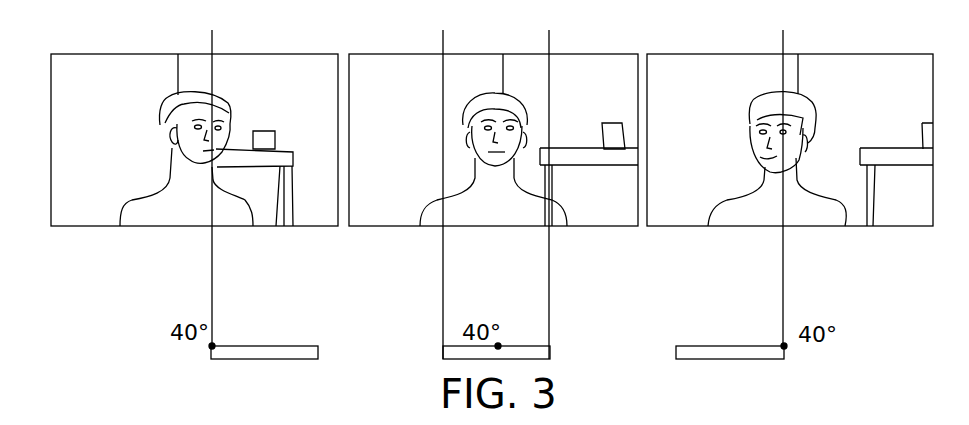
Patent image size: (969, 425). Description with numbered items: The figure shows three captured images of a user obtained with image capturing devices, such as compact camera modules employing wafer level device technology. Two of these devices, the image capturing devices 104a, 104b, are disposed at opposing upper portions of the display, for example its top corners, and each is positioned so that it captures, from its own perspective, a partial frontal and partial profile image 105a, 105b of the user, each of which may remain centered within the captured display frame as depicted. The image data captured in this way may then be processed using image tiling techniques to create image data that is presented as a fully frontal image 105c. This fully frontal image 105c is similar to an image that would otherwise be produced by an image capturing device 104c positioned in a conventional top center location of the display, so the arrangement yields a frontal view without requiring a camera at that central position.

The partial frontal and partial profile image 105a is at (765, 120).
The partial frontal and partial profile image 105b is at (197, 112).
The fully frontal image 105c is at (493, 110).
The image capturing device 104a is at (783, 346).
The image capturing device 104b is at (212, 346).
The image capturing device 104c is at (498, 346).